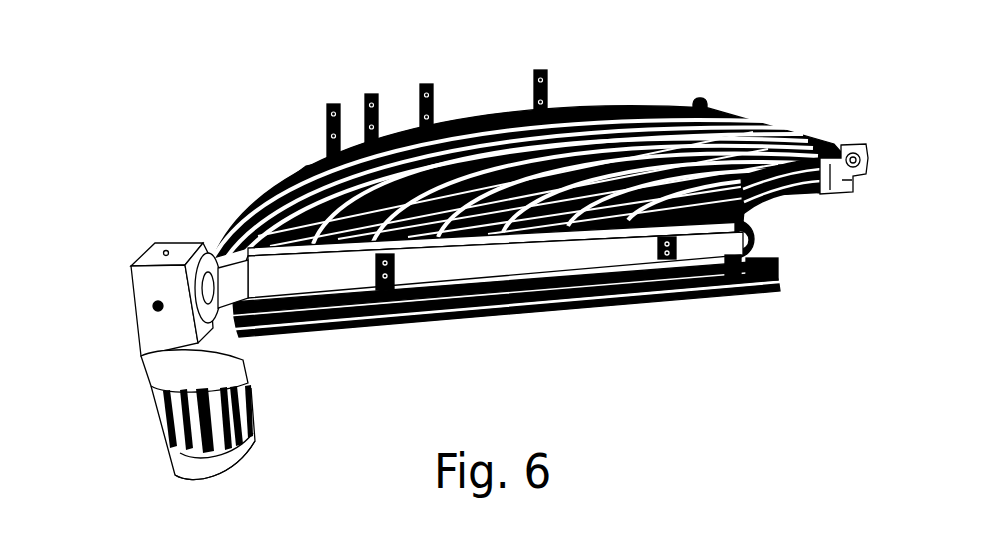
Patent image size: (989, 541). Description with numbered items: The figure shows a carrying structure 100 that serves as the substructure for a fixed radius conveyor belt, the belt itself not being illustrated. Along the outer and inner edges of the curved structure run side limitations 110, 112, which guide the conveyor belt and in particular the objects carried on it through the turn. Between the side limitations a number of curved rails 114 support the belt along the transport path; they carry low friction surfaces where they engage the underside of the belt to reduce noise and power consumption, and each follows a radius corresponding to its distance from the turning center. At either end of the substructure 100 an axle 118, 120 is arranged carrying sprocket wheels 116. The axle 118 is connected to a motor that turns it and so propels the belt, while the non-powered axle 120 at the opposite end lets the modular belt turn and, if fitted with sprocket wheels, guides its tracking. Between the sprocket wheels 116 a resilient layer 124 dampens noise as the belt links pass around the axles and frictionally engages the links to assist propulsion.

The carrying structure 100 is at (528, 153).
The side limitation 110 is at (766, 188).
The side limitation 112 is at (284, 163).
The rail 114 is at (356, 216).
The sprocket wheel 116 is at (380, 280).
The axle 118 is at (494, 329).
The non-powered axle 120 is at (858, 146).
The resilient layer 124 is at (462, 262).